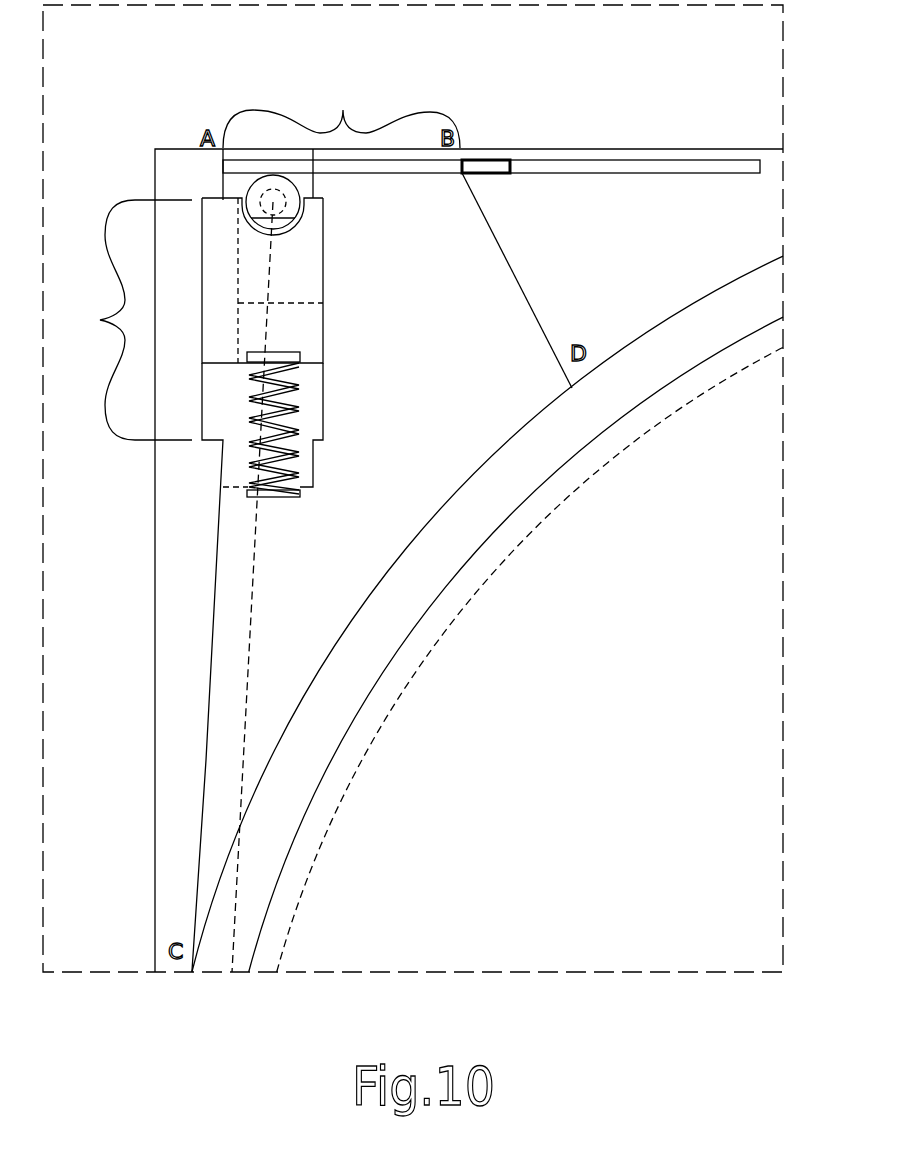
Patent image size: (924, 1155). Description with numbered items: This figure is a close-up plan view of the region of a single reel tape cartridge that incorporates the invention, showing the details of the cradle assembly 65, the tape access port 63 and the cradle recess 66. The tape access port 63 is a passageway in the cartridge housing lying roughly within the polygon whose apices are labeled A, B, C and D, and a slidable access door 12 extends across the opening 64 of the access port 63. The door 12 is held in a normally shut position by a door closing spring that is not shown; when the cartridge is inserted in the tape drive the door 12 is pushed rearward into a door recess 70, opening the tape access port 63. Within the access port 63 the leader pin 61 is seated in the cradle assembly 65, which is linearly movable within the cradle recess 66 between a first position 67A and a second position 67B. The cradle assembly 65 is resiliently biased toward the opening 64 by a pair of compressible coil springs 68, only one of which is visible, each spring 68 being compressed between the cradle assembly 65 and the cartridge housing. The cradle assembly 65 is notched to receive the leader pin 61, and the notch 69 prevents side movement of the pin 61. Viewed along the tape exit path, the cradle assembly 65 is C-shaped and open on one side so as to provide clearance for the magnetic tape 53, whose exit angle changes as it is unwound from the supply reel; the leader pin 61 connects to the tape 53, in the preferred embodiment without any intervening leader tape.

The access door 12 is at (325, 165).
The magnetic tape 53 is at (250, 645).
The leader pin 61 is at (263, 202).
The tape access port 63 is at (458, 343).
The opening 64 is at (343, 112).
The cradle assembly 65 is at (288, 267).
The cradle recess 66 is at (129, 320).
The first position 67A is at (190, 369).
The second position 67B is at (186, 447).
The compressible coil spring 68 is at (253, 440).
The notch 69 is at (330, 208).
The door recess 70 is at (670, 165).